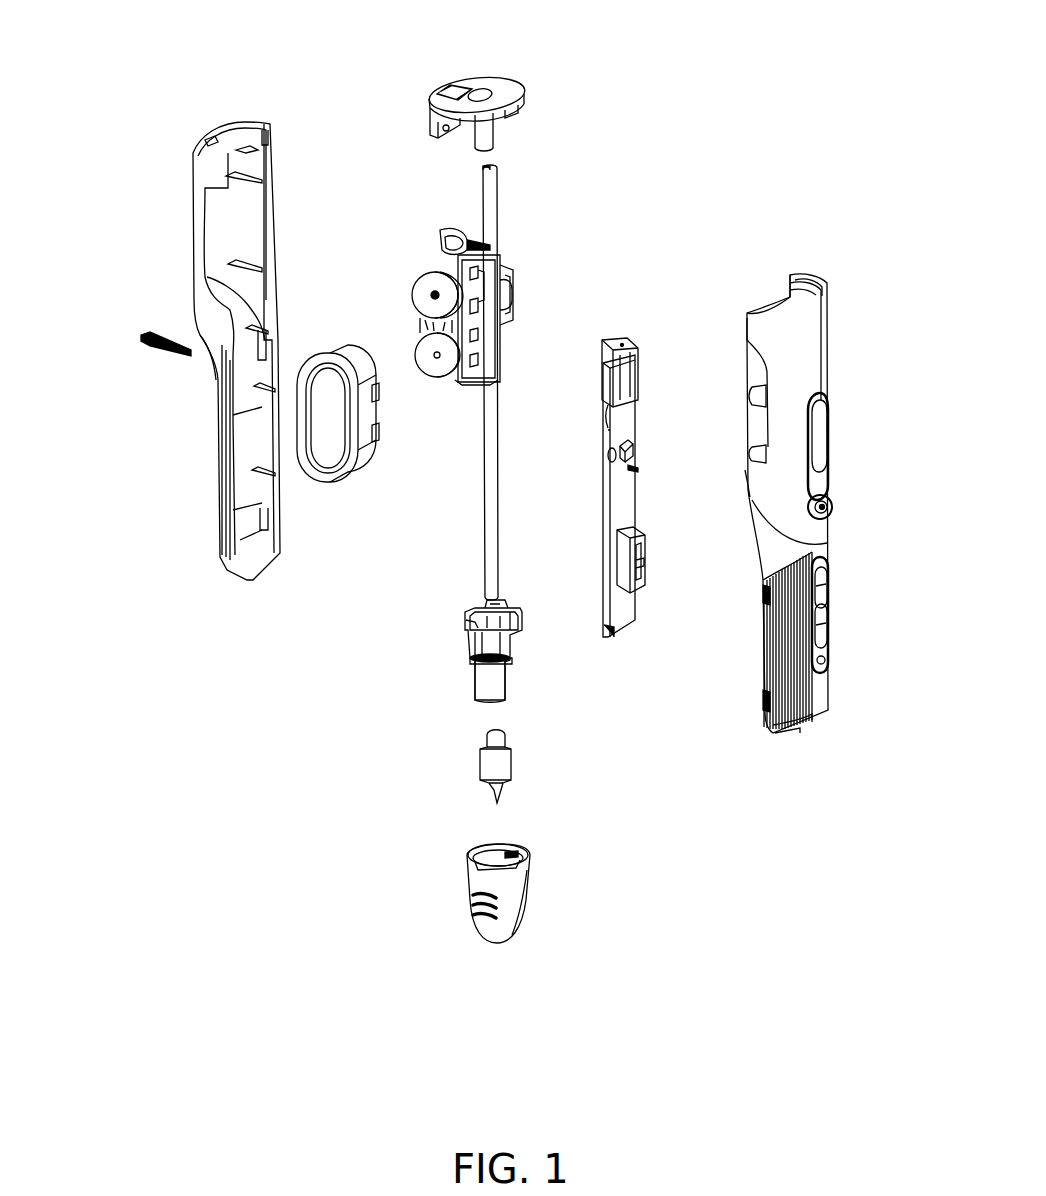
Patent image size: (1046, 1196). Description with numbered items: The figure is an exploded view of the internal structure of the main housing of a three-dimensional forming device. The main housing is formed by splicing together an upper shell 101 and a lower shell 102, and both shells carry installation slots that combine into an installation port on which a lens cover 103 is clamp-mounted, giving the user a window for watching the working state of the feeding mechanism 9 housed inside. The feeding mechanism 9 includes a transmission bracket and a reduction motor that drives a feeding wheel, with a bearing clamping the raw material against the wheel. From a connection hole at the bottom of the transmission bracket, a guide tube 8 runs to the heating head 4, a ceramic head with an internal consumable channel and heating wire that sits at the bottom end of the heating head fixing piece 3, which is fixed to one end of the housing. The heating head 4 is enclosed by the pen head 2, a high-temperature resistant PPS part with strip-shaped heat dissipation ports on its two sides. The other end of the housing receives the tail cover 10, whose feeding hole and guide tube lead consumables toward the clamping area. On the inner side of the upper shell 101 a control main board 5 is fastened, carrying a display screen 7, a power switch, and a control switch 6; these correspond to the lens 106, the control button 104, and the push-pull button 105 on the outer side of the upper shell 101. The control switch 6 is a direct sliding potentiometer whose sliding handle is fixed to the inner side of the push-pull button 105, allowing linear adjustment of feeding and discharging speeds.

The pen head 2 is at (528, 912).
The heating head fixing piece 3 is at (514, 680).
The heating head 4 is at (516, 778).
The control main board 5 is at (636, 622).
The control switch 6 is at (647, 552).
The display screen 7 is at (643, 366).
The guide tube 8 is at (501, 500).
The feeding mechanism 9 is at (440, 248).
The tail cover 10 is at (511, 80).
The upper shell 101 is at (817, 356).
The lower shell 102 is at (217, 405).
The lens cover 103 is at (300, 457).
The control button 104 is at (825, 506).
The push-pull button 105 is at (831, 625).
The lens 106 is at (823, 441).